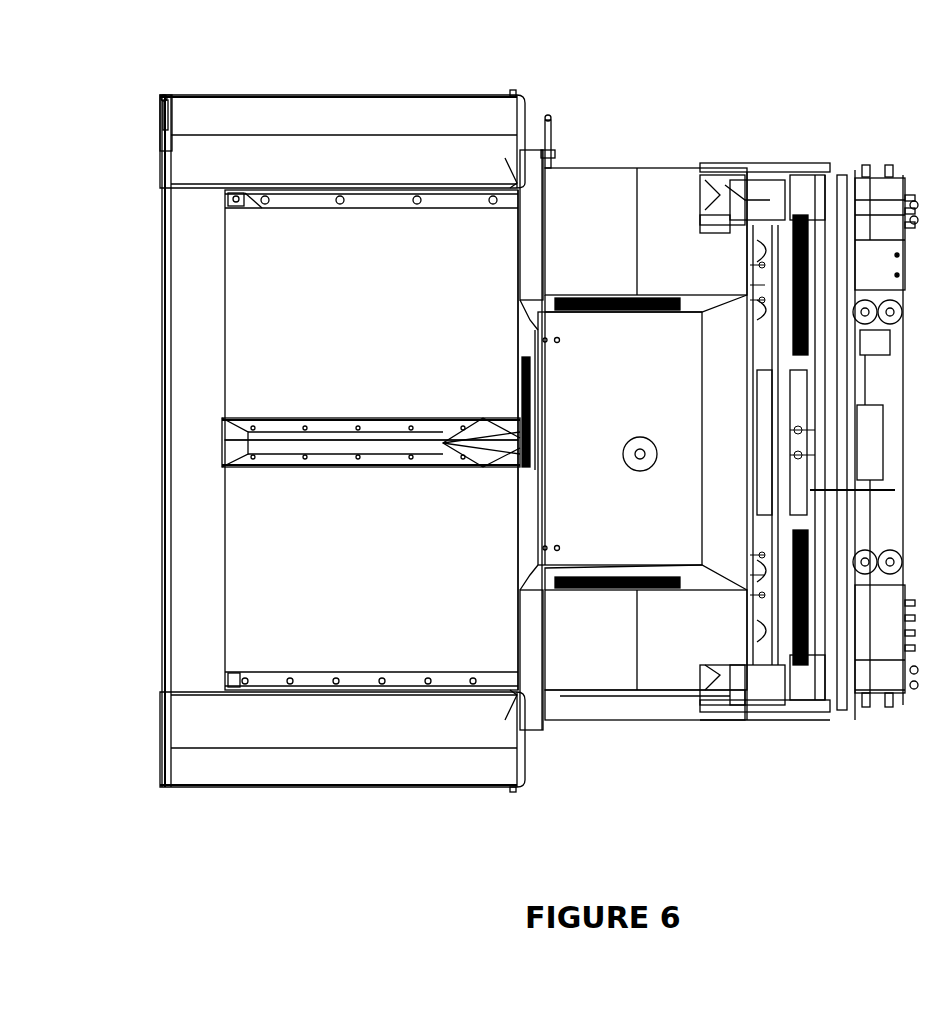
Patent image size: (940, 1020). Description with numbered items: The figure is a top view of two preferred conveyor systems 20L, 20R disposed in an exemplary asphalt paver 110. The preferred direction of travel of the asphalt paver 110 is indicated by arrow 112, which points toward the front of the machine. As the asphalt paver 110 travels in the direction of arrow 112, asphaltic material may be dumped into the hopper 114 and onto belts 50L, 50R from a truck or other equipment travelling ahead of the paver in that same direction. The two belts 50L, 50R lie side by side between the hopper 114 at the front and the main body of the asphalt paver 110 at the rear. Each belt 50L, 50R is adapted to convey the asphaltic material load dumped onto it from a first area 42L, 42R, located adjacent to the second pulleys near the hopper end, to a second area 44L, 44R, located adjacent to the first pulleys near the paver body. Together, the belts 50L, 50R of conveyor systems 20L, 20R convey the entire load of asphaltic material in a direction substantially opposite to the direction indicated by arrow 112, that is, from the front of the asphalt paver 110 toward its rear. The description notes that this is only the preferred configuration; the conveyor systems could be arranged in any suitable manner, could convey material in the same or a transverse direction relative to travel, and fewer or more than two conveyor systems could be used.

The hopper 114 is at (160, 152).
The belt 50R is at (305, 232).
The belt 50L is at (362, 640).
The conveyor system 20R is at (156, 271).
The conveyor system 20L is at (156, 644).
The first area 42R is at (245, 340).
The first area 42L is at (255, 576).
The arrow 112 is at (100, 440).
The second area 44R is at (505, 296).
The second area 44L is at (497, 577).
The asphalt paver 110 is at (707, 427).